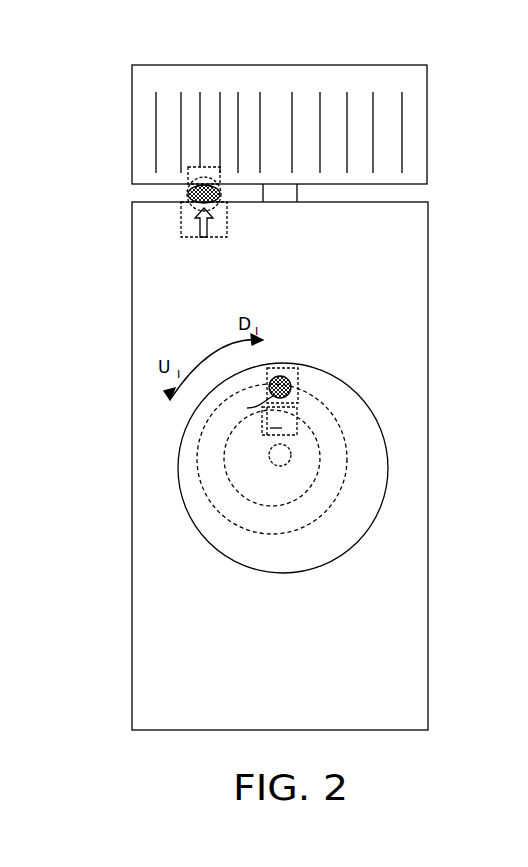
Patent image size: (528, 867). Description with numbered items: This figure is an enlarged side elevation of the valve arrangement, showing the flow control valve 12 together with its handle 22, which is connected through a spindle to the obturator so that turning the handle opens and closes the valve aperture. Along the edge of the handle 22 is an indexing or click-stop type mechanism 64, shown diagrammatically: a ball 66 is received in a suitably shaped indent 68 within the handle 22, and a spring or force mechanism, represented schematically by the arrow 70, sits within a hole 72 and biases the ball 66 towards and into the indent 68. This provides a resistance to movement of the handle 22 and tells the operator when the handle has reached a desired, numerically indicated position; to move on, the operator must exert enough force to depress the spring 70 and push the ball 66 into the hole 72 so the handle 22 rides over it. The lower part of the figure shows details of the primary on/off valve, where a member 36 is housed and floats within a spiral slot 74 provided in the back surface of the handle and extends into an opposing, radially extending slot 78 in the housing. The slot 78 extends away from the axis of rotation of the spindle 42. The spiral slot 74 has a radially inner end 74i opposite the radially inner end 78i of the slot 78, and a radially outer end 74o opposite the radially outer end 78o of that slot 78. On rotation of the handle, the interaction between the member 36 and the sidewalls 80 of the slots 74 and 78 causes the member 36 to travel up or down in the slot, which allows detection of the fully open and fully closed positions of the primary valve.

The flow control valve 12 is at (428, 225).
The handle 22 is at (333, 72).
The member 36 is at (290, 372).
The spindle 42 is at (283, 458).
The indexing mechanism 64 is at (166, 157).
The ball 66 is at (222, 194).
The indent 68 is at (190, 182).
The spring 70 is at (212, 228).
The hole 72 is at (182, 225).
The spiral slot 74 is at (257, 533).
The radially outer end of spiral slot 74o is at (297, 395).
The radially inner end of spiral slot 74i is at (262, 418).
The radially extending slot 78 is at (297, 410).
The radially outer end of slot 78o is at (247, 408).
The radially inner end of slot 78i is at (277, 428).
The sidewalls 80 is at (328, 514).